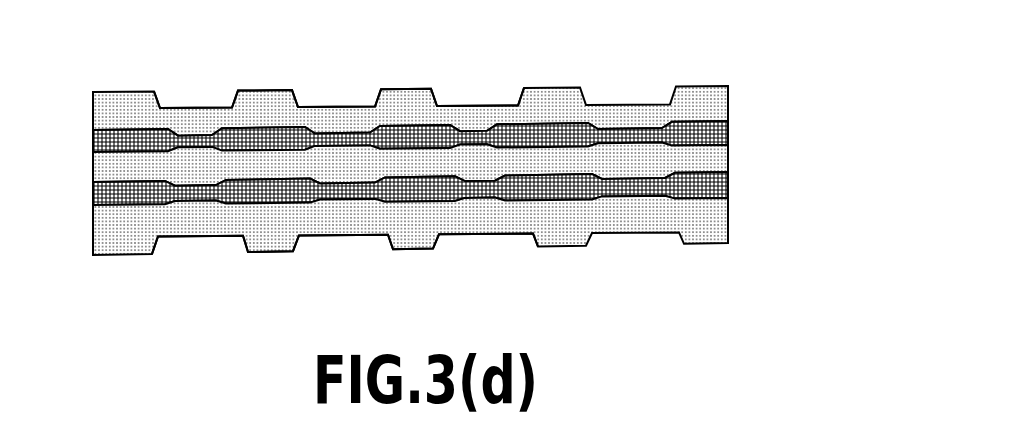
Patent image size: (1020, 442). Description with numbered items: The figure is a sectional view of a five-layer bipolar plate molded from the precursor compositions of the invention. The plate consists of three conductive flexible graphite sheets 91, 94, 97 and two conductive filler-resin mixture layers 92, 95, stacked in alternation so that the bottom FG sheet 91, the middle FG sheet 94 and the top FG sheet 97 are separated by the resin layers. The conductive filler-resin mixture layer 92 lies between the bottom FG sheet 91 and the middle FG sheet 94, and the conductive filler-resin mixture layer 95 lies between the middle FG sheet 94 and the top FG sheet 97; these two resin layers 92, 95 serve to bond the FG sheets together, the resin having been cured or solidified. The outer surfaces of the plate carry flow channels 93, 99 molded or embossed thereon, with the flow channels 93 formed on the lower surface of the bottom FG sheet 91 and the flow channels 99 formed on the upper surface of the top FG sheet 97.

The conductive FG sheet 91 is at (722, 226).
The conductive filler-resin mixture layer 92 is at (718, 183).
The flow channels 93 is at (197, 243).
The conductive FG sheet 94 is at (715, 161).
The conductive filler-resin mixture layer 95 is at (728, 134).
The conductive FG sheet 97 is at (718, 103).
The flow channels 99 is at (477, 103).